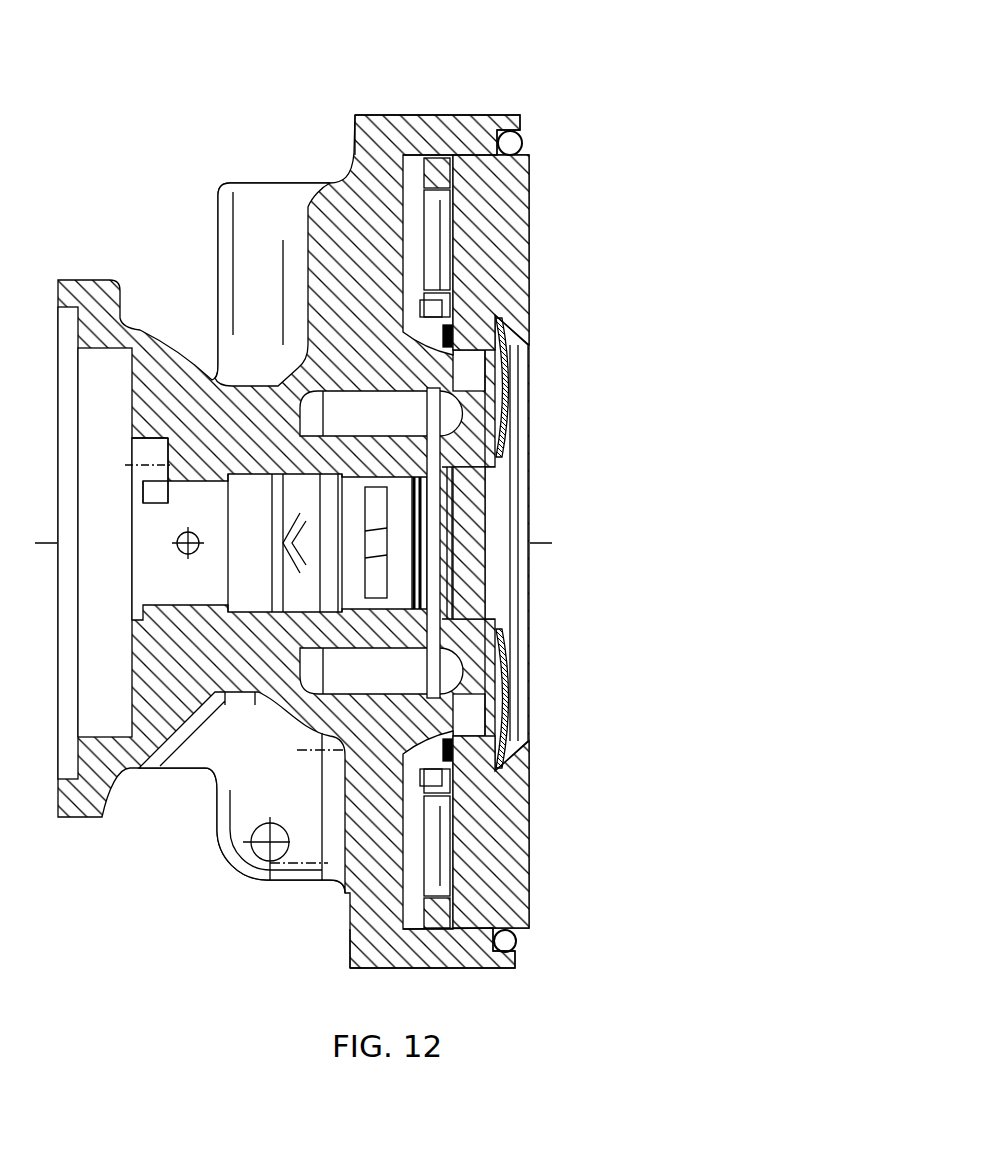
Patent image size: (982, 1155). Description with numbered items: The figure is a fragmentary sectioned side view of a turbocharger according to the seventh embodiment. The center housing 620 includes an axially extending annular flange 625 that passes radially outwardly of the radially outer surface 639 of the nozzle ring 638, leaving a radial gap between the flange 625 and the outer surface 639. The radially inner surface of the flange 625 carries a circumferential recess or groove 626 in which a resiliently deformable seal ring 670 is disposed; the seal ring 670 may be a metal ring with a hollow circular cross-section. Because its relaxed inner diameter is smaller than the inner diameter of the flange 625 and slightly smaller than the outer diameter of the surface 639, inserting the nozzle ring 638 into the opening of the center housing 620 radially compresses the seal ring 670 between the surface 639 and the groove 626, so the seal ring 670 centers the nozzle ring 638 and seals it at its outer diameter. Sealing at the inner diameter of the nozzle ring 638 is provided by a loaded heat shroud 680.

The center housing 620 is at (320, 298).
The axially extending annular flange 625 is at (467, 127).
The circumferential recess or groove 626 is at (504, 932).
The nozzle ring 638 is at (512, 843).
The radially outer surface 639 is at (465, 928).
The seal ring 670 is at (523, 142).
The loaded heat shroud 680 is at (507, 700).